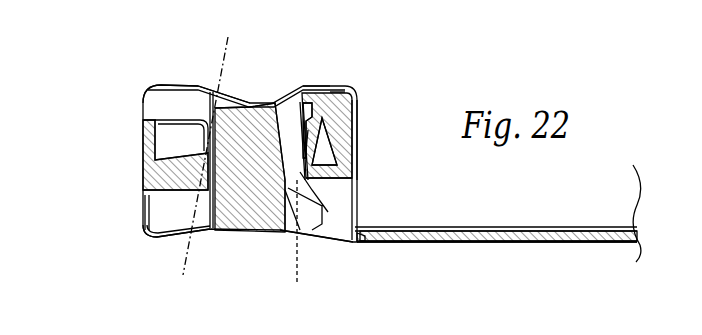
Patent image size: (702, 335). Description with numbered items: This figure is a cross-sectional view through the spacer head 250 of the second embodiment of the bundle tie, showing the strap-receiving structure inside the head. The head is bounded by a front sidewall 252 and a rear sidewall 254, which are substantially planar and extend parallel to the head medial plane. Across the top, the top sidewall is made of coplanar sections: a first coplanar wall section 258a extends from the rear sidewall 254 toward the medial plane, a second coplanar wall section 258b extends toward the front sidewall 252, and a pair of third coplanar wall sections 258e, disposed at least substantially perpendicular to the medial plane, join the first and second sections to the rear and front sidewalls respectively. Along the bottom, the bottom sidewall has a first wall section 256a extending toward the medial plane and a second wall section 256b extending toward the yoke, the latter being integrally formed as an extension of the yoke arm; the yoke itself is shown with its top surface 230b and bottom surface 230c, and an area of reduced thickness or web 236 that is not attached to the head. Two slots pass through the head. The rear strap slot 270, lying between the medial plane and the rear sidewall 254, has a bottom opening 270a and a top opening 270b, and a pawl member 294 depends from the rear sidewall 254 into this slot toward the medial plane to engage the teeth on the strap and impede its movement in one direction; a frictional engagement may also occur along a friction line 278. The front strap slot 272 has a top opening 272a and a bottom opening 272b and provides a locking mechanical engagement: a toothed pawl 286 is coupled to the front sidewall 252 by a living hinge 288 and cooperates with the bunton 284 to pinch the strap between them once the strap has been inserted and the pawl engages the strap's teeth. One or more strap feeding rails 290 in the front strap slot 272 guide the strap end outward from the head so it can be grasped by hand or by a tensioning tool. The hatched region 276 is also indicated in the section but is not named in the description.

The spacer head 250 is at (127, 173).
The front sidewall 252 is at (340, 113).
The rear sidewall 254 is at (139, 131).
The first wall section of bottom sidewall 256a is at (201, 255).
The second wall section of bottom sidewall 256b is at (322, 238).
The first coplanar wall section of top sidewall 258a is at (200, 88).
The second coplanar wall section of top sidewall 258b is at (297, 88).
The third coplanar wall section 258e is at (170, 88).
The rear strap slot 270 is at (153, 235).
The bottom opening of rear strap slot 270a is at (157, 240).
The top opening of rear strap slot 270b is at (148, 92).
The front strap slot 272 is at (324, 199).
The top opening of front strap slot 272a is at (334, 86).
The bottom opening of front strap slot 272b is at (297, 242).
The insulating layer 276 is at (273, 103).
The friction line 278 is at (213, 146).
The bunton 284 is at (173, 207).
The toothed pawl 286 is at (340, 150).
The living hinge 288 is at (340, 128).
The strap feeding rail 290 is at (263, 232).
The pawl member 294 is at (139, 140).
The top surface of yoke 230b is at (440, 228).
The bottom surface of yoke 230c is at (457, 243).
The web 236 is at (383, 243).